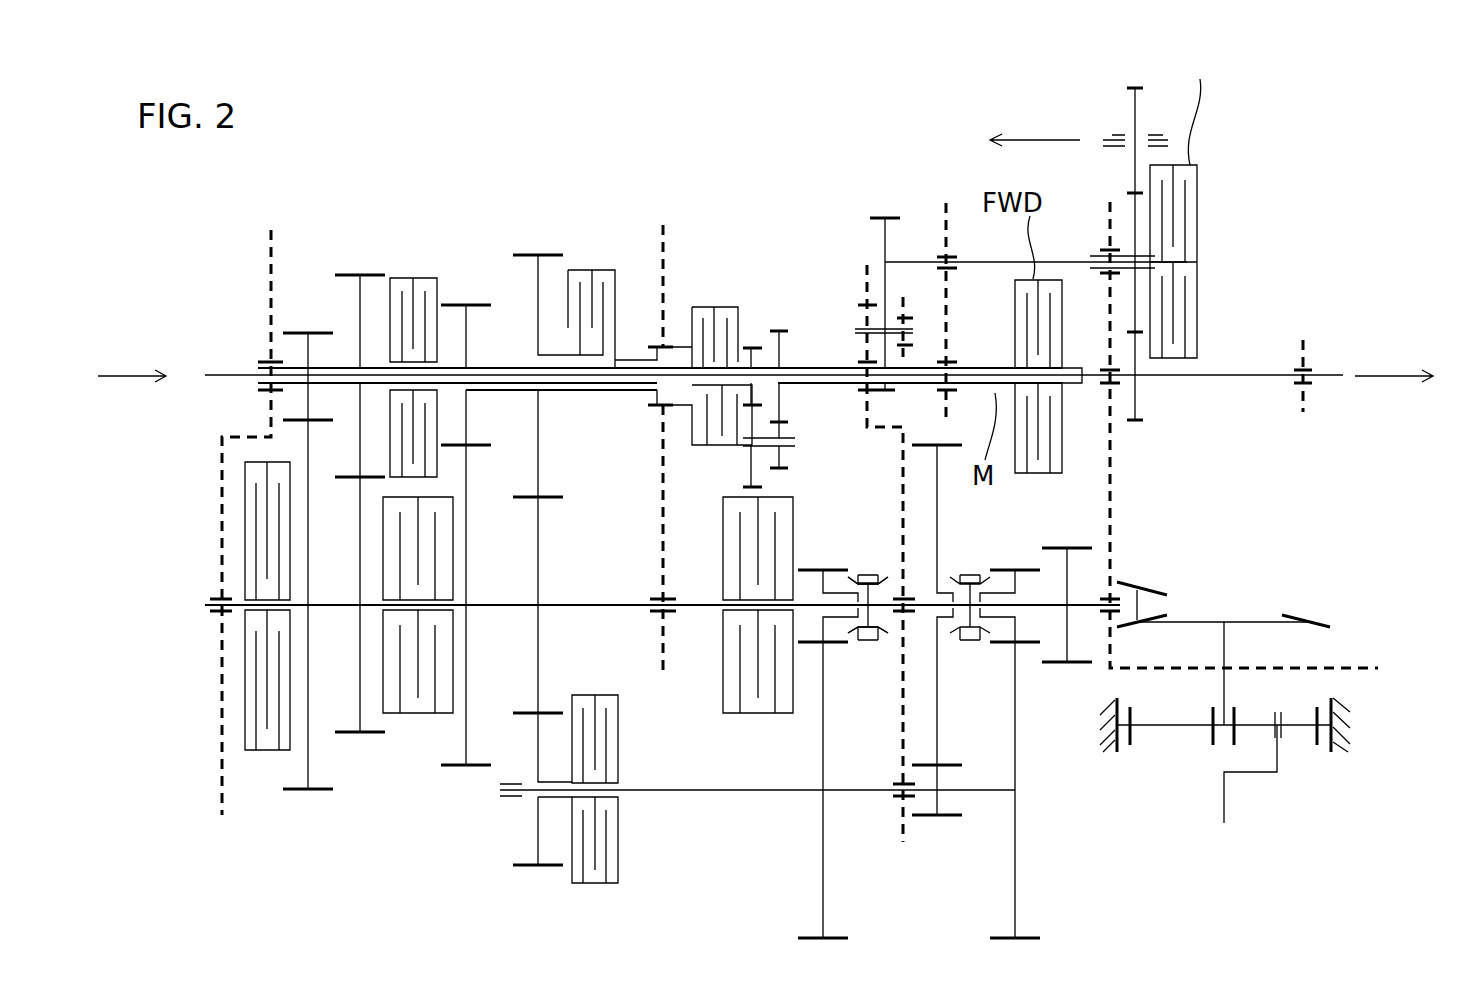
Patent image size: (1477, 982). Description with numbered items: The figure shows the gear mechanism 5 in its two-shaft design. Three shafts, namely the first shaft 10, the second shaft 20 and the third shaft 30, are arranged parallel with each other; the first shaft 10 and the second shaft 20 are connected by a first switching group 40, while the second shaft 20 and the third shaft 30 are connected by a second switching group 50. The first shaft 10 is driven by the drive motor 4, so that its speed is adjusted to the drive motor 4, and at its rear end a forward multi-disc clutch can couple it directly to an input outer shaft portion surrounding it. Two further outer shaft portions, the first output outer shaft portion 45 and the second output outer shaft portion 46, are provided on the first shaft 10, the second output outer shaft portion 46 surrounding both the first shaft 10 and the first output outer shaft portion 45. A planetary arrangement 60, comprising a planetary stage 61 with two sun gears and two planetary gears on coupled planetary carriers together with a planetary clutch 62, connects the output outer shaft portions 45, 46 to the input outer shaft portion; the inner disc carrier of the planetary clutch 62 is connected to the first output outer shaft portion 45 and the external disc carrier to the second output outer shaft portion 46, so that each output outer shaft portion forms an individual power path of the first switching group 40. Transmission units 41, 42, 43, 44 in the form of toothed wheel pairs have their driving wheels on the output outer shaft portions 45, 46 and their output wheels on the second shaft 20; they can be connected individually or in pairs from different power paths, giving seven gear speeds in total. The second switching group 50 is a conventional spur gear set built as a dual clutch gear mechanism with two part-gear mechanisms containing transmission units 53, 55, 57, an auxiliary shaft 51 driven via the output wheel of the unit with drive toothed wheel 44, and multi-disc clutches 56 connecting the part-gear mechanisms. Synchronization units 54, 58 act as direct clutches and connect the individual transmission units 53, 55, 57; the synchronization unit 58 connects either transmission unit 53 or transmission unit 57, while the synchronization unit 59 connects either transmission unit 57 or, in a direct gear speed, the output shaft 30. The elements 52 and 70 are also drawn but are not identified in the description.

The drive motor 4 is at (118, 374).
The gear mechanism 5 is at (1384, 204).
The first shaft 10 is at (218, 378).
The second shaft 20 is at (208, 605).
The third shaft (output shaft) 30 is at (1085, 603).
The first switching group 40 is at (589, 172).
The transmission unit 41 is at (322, 330).
The transmission unit 42 is at (370, 273).
The transmission unit 43 is at (468, 304).
The transmission unit (drive toothed wheel) 44 is at (553, 252).
The first output outer shaft portion 45 is at (298, 365).
The second output outer shaft portion 46 is at (510, 366).
The second switching group 50 is at (497, 889).
The auxiliary shaft 51 is at (665, 792).
The gear 52 is at (548, 868).
The transmission unit 53 is at (950, 817).
The synchronization unit 54 is at (863, 645).
The transmission unit 55 is at (1015, 866).
The multi-disc clutch 56 is at (598, 885).
The transmission unit 57 is at (858, 664).
The synchronization unit 58 is at (975, 646).
The synchronization unit 59 is at (866, 568).
The planetary arrangement 60 is at (738, 285).
The planetary stage 61 is at (771, 319).
The planetary clutch 62 is at (705, 305).
The reverse gear unit 70 is at (1264, 125).